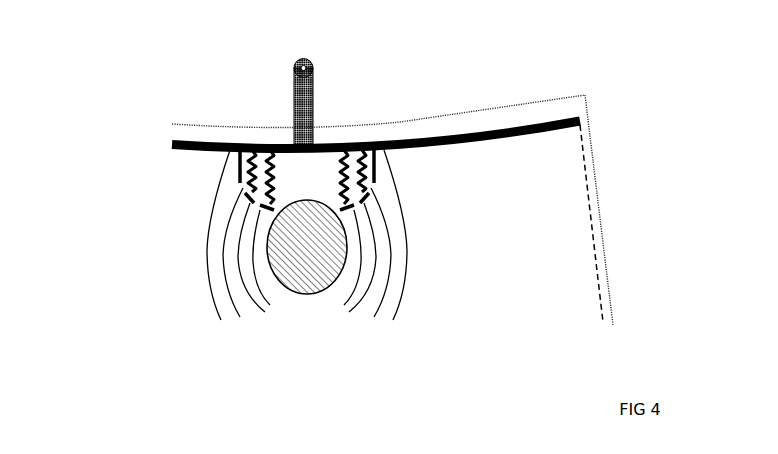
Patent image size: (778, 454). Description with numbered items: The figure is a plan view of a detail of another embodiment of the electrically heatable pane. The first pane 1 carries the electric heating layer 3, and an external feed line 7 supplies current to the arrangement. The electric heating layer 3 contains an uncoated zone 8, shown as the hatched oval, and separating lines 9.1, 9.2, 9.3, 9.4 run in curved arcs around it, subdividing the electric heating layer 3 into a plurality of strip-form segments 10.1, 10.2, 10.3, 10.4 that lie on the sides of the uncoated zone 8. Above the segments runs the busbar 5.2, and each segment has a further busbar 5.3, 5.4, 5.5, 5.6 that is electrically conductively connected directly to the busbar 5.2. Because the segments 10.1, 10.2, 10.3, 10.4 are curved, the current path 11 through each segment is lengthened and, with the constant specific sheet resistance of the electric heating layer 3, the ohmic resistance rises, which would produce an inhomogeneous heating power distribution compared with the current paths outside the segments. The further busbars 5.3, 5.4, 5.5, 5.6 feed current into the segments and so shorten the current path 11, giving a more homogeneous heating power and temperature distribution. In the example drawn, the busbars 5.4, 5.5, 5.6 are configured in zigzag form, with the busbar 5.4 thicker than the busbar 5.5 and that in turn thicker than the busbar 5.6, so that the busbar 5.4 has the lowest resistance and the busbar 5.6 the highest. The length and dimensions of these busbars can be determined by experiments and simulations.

The first pane 1 is at (600, 208).
The electric heating layer 3 is at (558, 243).
The busbar 5.2 is at (533, 123).
The busbar 5.3 is at (239, 179).
The busbar 5.4 is at (258, 152).
The busbar 5.5 is at (229, 146).
The busbar 5.6 is at (238, 168).
The external feed line 7 is at (310, 92).
The uncoated zone 8 is at (302, 262).
The current path 11 is at (352, 240).
The separating line 9.1 is at (267, 302).
The separating line 9.2 is at (245, 290).
The separating line 9.3 is at (224, 252).
The separating line 9.4 is at (212, 218).
The segment 10.1 is at (278, 307).
The segment 10.2 is at (243, 297).
The segment 10.3 is at (217, 273).
The segment 10.4 is at (208, 244).